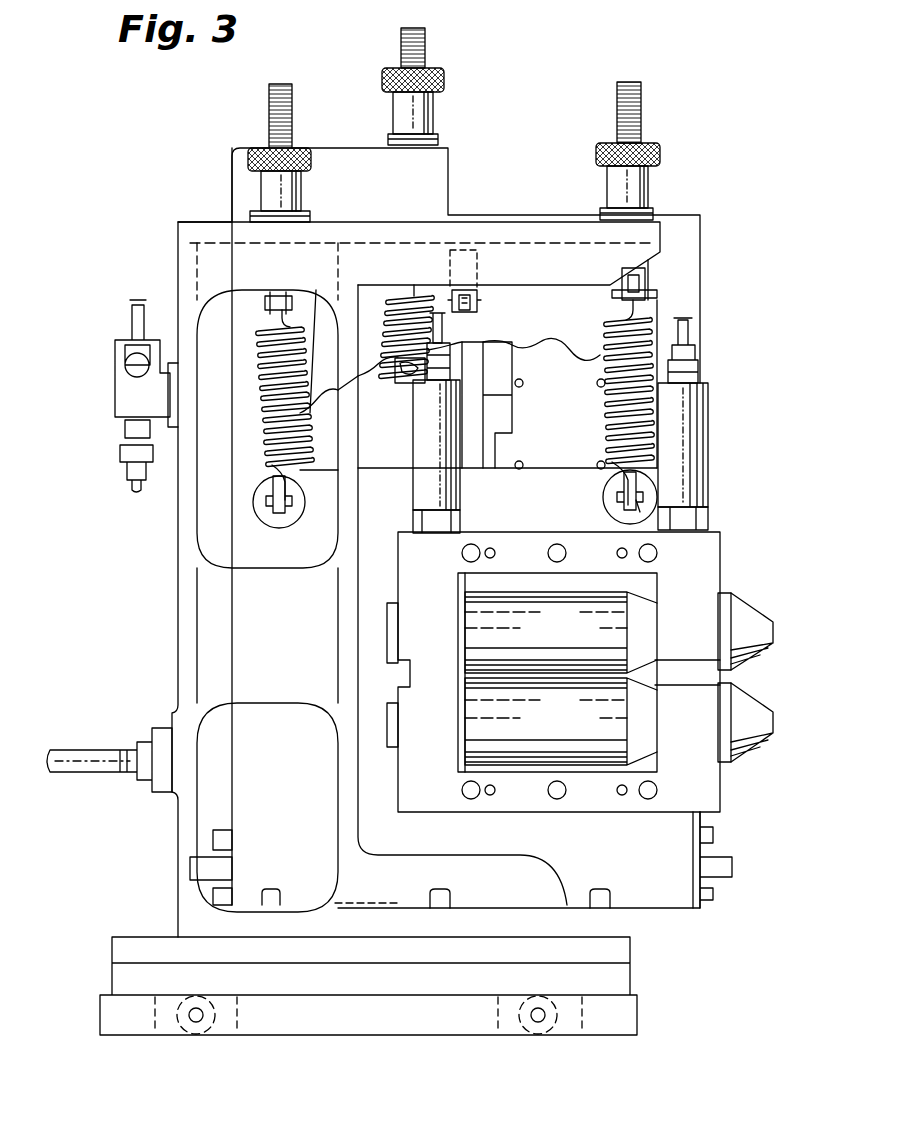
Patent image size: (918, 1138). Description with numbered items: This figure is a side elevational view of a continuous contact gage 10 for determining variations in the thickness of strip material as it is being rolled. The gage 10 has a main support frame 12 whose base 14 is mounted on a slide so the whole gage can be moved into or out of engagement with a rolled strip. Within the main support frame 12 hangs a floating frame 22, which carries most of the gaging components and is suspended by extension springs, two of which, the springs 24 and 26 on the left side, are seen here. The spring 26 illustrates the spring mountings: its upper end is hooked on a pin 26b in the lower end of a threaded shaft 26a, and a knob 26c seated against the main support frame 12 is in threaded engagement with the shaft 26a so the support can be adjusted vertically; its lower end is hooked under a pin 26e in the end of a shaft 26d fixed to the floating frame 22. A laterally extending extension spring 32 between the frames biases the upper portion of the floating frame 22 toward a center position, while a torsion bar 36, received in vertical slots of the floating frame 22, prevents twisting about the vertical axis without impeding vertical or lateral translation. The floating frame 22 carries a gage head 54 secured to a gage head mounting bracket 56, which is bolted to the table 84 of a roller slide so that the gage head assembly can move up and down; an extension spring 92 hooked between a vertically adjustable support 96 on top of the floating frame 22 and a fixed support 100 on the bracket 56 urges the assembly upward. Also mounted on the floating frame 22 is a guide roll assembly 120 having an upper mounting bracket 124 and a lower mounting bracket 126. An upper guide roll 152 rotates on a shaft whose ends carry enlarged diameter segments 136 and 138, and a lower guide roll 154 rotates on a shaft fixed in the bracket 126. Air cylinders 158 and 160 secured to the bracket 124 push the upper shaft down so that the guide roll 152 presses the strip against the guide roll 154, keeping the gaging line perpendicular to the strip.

The continuous contact gage 10 is at (168, 153).
The main support frame 12 is at (230, 640).
The base 14 is at (622, 950).
The floating frame 22 is at (575, 500).
The extension spring 24 is at (262, 345).
The extension spring 26 is at (640, 322).
The threaded shaft 26a is at (640, 112).
The pin 26b is at (640, 290).
The knob 26c is at (636, 185).
The shaft 26d is at (615, 505).
The pin 26e is at (650, 505).
The laterally extending extension spring 32 is at (470, 312).
The torsion bar 36 is at (718, 862).
The gage head 54 is at (532, 420).
The gage head mounting bracket 56 is at (370, 428).
The table 84 is at (287, 185).
The extension spring 92 is at (360, 290).
The vertically adjustable support 96 is at (418, 115).
The fixed support 100 is at (405, 373).
The guide roll assembly 120 is at (716, 591).
The mounting bracket 124 is at (705, 550).
The mounting bracket 126 is at (705, 783).
The enlarged diameter segment 136 is at (385, 627).
The enlarged diameter segment 138 is at (742, 614).
The upper guide roll 152 is at (565, 646).
The lower guide roll 154 is at (565, 732).
The air cylinder 158 is at (442, 482).
The air cylinder 160 is at (696, 405).